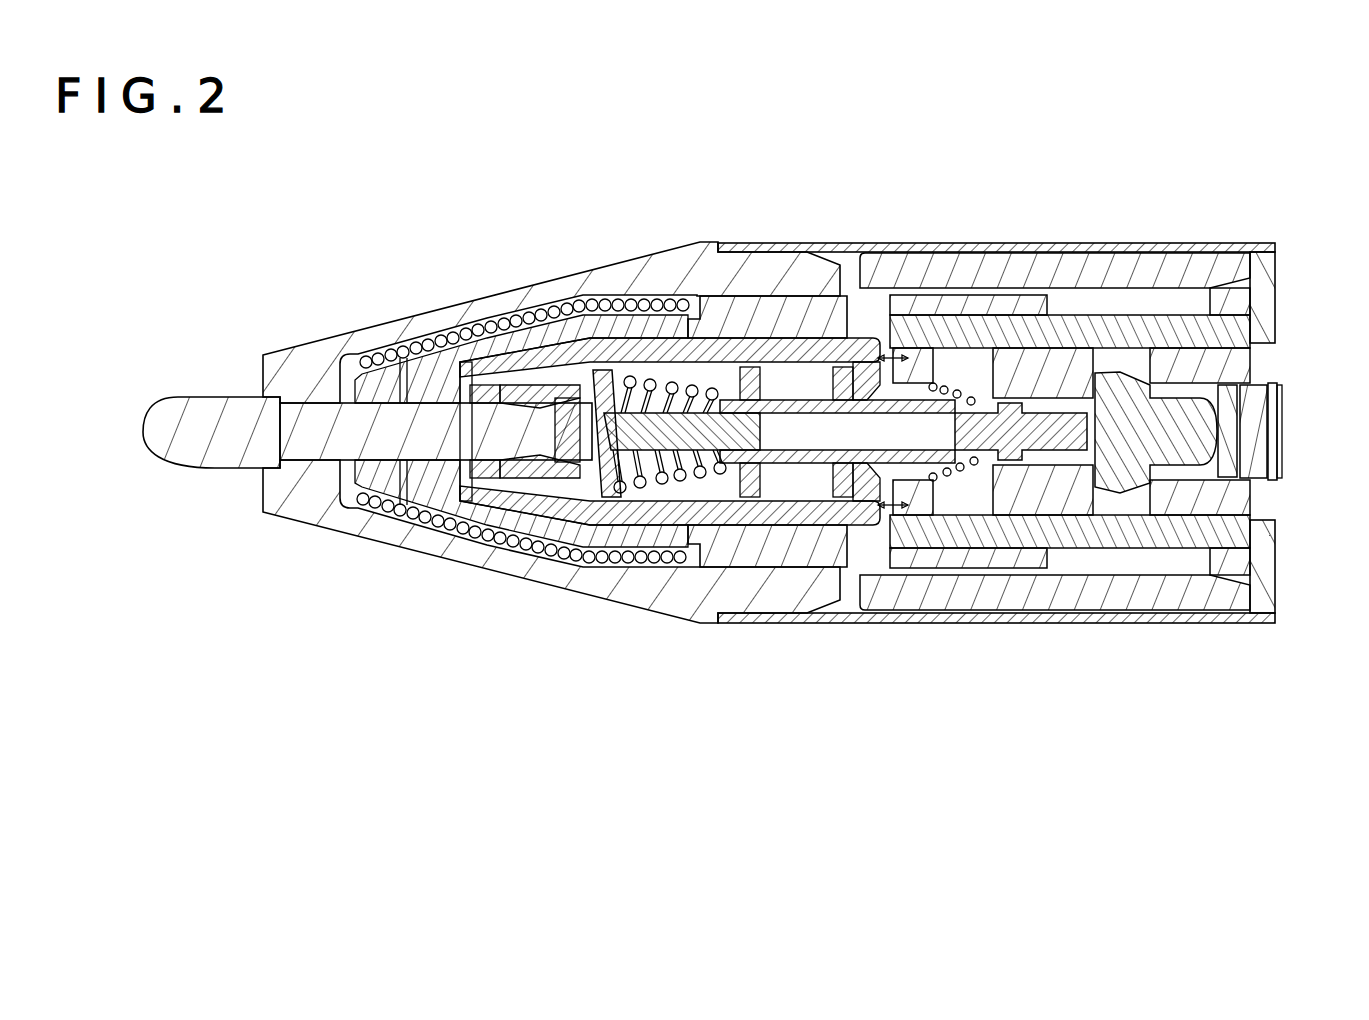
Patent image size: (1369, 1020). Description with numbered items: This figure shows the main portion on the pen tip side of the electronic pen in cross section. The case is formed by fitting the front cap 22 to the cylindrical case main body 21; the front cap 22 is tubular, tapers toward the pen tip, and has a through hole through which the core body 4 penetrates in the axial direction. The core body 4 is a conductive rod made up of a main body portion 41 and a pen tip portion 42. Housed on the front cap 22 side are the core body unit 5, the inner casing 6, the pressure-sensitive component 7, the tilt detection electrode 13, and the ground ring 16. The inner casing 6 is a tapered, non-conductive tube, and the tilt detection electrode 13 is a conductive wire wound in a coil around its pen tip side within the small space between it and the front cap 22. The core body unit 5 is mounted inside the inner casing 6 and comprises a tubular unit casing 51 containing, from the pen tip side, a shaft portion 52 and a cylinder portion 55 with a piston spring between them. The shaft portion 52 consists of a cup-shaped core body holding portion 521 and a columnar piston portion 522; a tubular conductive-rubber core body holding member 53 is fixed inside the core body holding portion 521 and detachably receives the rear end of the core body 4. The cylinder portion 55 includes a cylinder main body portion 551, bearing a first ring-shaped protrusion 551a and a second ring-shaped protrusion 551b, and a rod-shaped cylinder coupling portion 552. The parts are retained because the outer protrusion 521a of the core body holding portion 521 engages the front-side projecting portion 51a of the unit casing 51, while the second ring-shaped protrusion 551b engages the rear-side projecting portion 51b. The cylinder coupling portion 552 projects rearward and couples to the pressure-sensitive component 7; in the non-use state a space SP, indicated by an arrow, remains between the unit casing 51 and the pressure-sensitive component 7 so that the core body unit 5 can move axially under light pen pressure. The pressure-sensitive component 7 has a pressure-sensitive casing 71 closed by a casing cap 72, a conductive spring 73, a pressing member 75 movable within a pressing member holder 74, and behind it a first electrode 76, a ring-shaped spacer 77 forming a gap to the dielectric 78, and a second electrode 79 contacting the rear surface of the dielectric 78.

The core body 4 is at (348, 264).
The main body portion 41 is at (333, 430).
The pen tip portion 42 is at (212, 423).
The tilt detection electrode 13 is at (458, 336).
The front cap 22 is at (650, 278).
The inner casing 6 is at (704, 330).
The case main body 21 is at (802, 258).
The front-side projecting portion 51a is at (530, 363).
The outer protrusion 521a is at (577, 300).
The first ring-shaped protrusion 551a is at (750, 375).
The second ring-shaped protrusion 551b is at (845, 380).
The rear-side projecting portion 51b is at (866, 350).
The space SP is at (893, 300).
The core body unit 5 is at (460, 743).
The unit casing 51 is at (721, 514).
The shaft portion 52 is at (662, 687).
The core body holding portion 521 is at (576, 480).
The piston portion 522 is at (653, 437).
The core body holding member 53 is at (521, 475).
The cylinder portion 55 is at (778, 687).
The cylinder main body portion 551 is at (795, 463).
The cylinder coupling portion 552 is at (1000, 433).
The pressure-sensitive component 7 is at (955, 160).
The pressure-sensitive casing 71 is at (1066, 292).
The casing cap 72 is at (958, 330).
The conductive spring 73 is at (985, 340).
The pressing member holder 74 is at (1183, 350).
The pressing member 75 is at (1118, 392).
The first electrode 76 is at (1229, 385).
The spacer 77 is at (1250, 380).
The dielectric 78 is at (1273, 378).
The second electrode 79 is at (1280, 393).
The ground ring 16 is at (1087, 596).